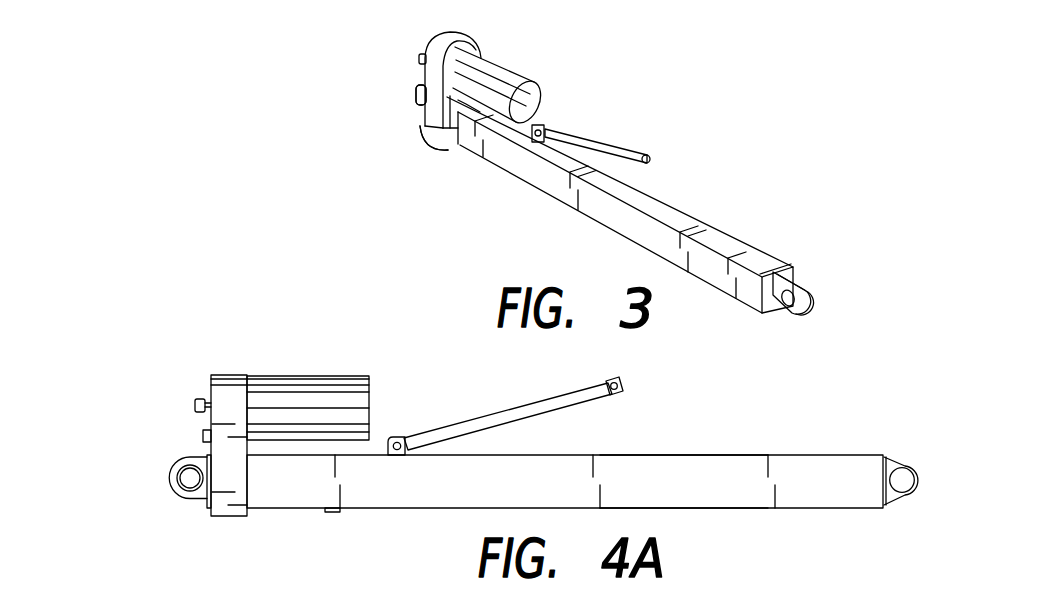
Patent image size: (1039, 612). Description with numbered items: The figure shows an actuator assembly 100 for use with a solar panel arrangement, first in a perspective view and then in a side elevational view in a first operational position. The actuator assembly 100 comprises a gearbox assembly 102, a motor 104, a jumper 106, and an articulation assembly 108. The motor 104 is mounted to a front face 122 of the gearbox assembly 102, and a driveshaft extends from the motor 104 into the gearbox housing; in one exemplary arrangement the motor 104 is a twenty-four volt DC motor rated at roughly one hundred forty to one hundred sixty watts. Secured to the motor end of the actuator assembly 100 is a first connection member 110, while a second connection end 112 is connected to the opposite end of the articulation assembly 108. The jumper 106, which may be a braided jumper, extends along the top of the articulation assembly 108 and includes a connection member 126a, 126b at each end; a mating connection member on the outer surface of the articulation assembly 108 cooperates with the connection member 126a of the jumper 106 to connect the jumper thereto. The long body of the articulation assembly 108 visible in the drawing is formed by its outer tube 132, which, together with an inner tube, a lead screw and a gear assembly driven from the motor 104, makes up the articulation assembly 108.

In FIG. 3, the actuator assembly 100 is at (724, 153).
In FIG. 3, the gearbox assembly 102 is at (410, 47).
In FIG. 4A, the gearbox assembly 102 is at (196, 376).
In FIG. 3, the motor 104 is at (530, 82).
In FIG. 4A, the motor 104 is at (294, 372).
In FIG. 3, the jumper 106 is at (595, 138).
In FIG. 4A, the jumper 106 is at (518, 415).
In FIG. 3, the articulation assembly 108 is at (757, 242).
In FIG. 4A, the articulation assembly 108 is at (826, 446).
In FIG. 3, the first connection member 110 is at (424, 100).
In FIG. 4A, the first connection member 110 is at (170, 470).
In FIG. 3, the second connection end 112 is at (806, 283).
In FIG. 4A, the second connection end 112 is at (930, 468).
In FIG. 3, the front face 122 is at (440, 152).
In FIG. 4A, the connection member 126a is at (400, 437).
In FIG. 4A, the connection member 126b is at (623, 388).
In FIG. 4A, the outer tube 132 is at (715, 455).